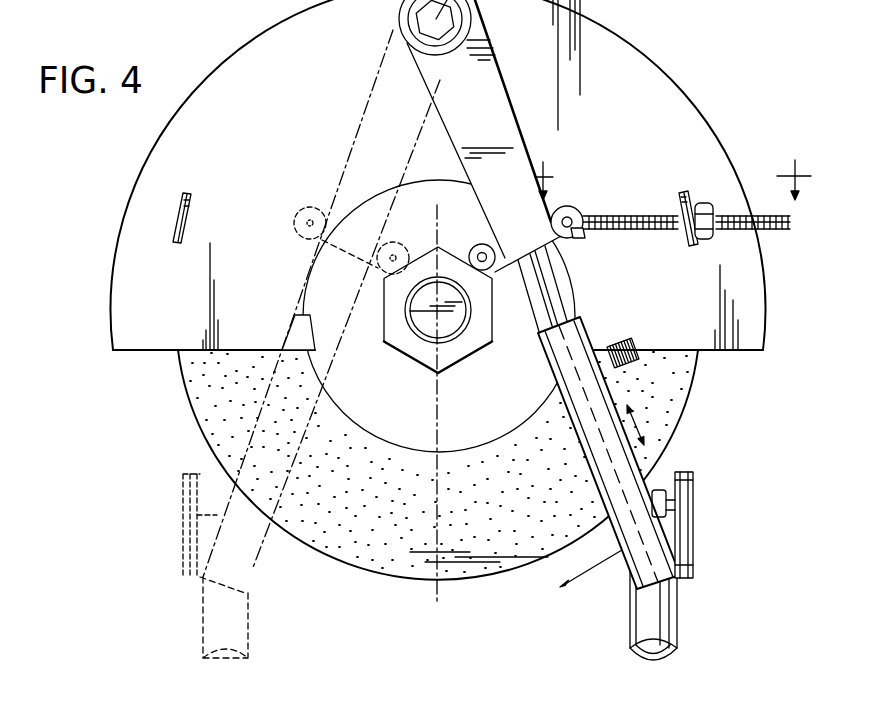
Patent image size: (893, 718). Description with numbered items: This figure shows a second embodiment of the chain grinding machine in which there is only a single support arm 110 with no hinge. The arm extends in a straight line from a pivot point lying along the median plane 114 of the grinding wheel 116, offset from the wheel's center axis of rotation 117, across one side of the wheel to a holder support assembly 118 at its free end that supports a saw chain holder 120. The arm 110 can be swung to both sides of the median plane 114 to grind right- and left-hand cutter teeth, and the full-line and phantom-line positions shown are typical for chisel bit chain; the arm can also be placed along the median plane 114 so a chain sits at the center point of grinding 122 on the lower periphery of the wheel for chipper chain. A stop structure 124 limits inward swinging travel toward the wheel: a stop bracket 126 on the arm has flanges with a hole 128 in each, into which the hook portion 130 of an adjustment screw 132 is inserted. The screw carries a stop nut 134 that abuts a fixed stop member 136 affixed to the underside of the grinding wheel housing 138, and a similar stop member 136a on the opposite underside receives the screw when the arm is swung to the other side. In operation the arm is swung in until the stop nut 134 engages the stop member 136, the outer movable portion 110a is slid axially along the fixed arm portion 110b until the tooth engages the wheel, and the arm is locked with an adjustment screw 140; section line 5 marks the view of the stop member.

The support arm 110 is at (505, 88).
The outer movable portion of arm 110a is at (578, 418).
The fixed arm portion 110b is at (565, 288).
The median plane 114 is at (444, 428).
The grinding wheel 116 is at (468, 583).
The center axis of rotation 117 is at (436, 314).
The holder support assembly 118 is at (631, 596).
The saw chain holder 120 is at (694, 498).
The center point of grinding 122 is at (438, 583).
The stop structure 124 is at (656, 211).
The stop bracket 126 is at (579, 238).
The hole 128 is at (470, 251).
The hook portion 130 is at (551, 222).
The adjustment screw 132 is at (639, 231).
The stop nut 134 is at (698, 203).
The fixed stop member 136 is at (683, 191).
The fixed stop member 136a is at (193, 214).
The grinding wheel housing 138 is at (651, 62).
The adjustment screw 140 is at (626, 341).
The section line 5- 5 is at (678, 184).